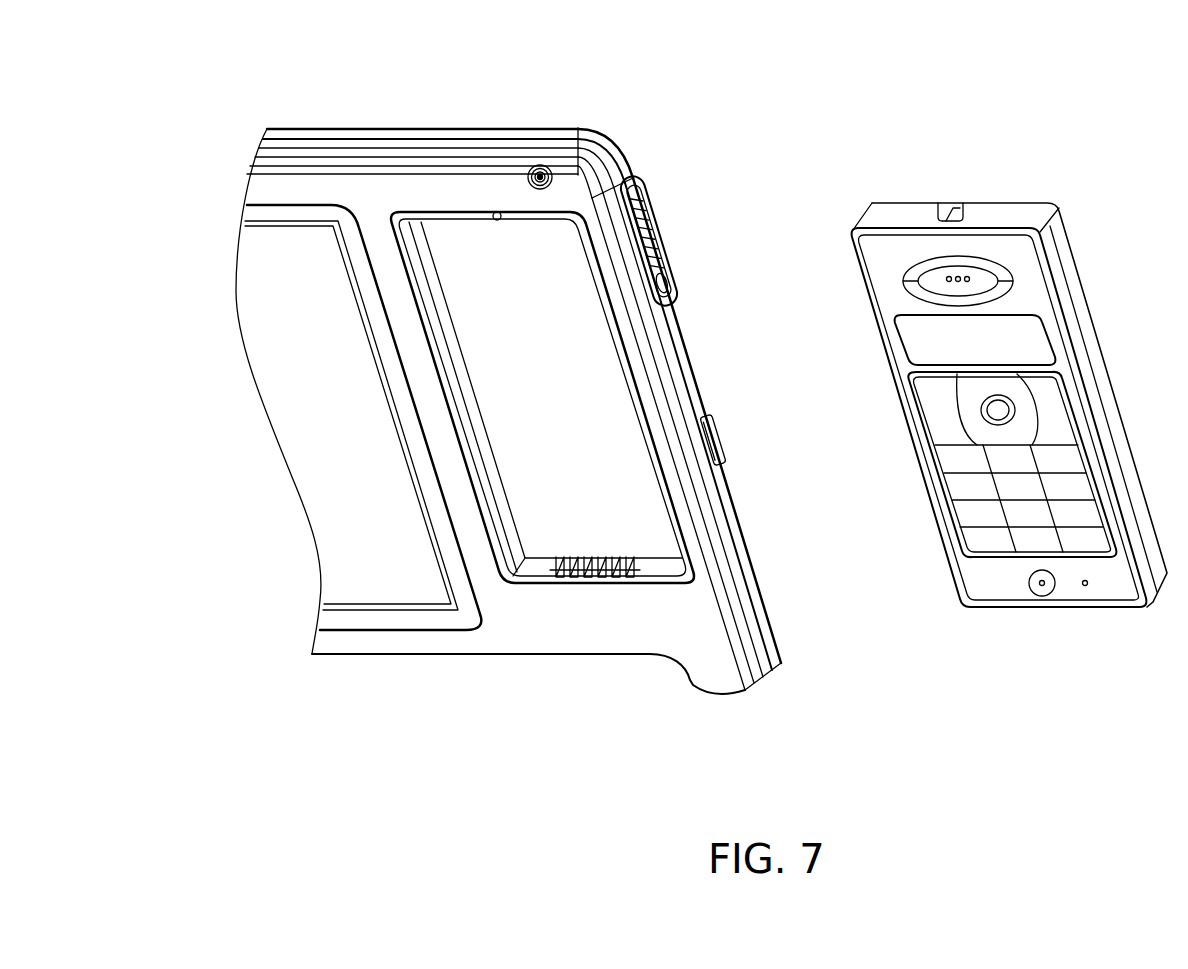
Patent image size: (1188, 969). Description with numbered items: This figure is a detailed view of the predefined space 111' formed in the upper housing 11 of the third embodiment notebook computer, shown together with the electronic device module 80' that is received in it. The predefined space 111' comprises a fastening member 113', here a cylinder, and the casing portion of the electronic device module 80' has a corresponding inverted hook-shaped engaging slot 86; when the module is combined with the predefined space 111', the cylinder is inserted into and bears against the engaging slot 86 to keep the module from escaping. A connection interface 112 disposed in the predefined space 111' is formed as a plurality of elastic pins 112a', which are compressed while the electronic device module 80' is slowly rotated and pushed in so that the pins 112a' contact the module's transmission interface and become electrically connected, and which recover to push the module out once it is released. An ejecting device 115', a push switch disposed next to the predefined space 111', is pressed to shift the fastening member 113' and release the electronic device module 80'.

The upper housing 11 is at (336, 186).
The predefined space 111' is at (596, 397).
The connection interface 112 is at (590, 580).
The elastic pins 112a' is at (604, 663).
The fastening member 113' is at (500, 124).
The ejecting device 115' is at (711, 236).
The electronic device module 80' is at (1011, 361).
The inverted hook-shaped engaging slot 86 is at (944, 206).